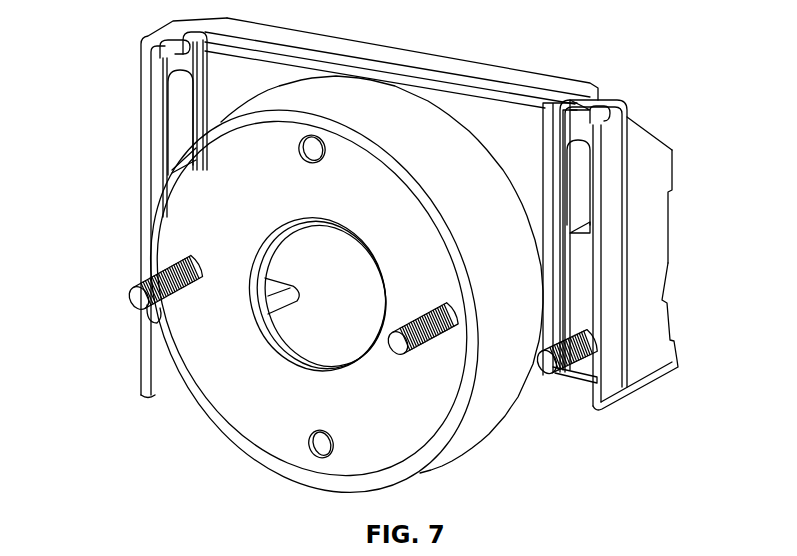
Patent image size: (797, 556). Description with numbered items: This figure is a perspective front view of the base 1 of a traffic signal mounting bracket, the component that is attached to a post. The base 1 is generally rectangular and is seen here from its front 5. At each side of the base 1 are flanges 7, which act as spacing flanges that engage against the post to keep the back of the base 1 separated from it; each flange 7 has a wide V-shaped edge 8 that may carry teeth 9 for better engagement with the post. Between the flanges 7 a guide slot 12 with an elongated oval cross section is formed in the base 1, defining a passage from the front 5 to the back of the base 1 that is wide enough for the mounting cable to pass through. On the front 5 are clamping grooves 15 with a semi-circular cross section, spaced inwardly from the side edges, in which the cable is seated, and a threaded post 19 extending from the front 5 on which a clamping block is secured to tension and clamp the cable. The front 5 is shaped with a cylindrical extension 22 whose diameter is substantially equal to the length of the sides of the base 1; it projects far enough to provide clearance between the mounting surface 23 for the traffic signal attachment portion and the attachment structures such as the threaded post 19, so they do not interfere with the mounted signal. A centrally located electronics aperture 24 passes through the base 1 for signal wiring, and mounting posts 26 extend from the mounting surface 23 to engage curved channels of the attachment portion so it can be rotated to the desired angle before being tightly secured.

The base 1 is at (703, 63).
The front 5 is at (220, 92).
The flanges 7 is at (652, 180).
The V-shaped edge 8 is at (663, 263).
The teeth 9 is at (673, 340).
The guide slot 12 is at (180, 90).
The clamping grooves 15 is at (558, 113).
The threaded post 19 is at (567, 367).
The cylindrical extension 22 is at (437, 133).
The mounting surface 23 is at (220, 367).
The electronics aperture 24 is at (318, 317).
The mounting posts 26 is at (127, 302).